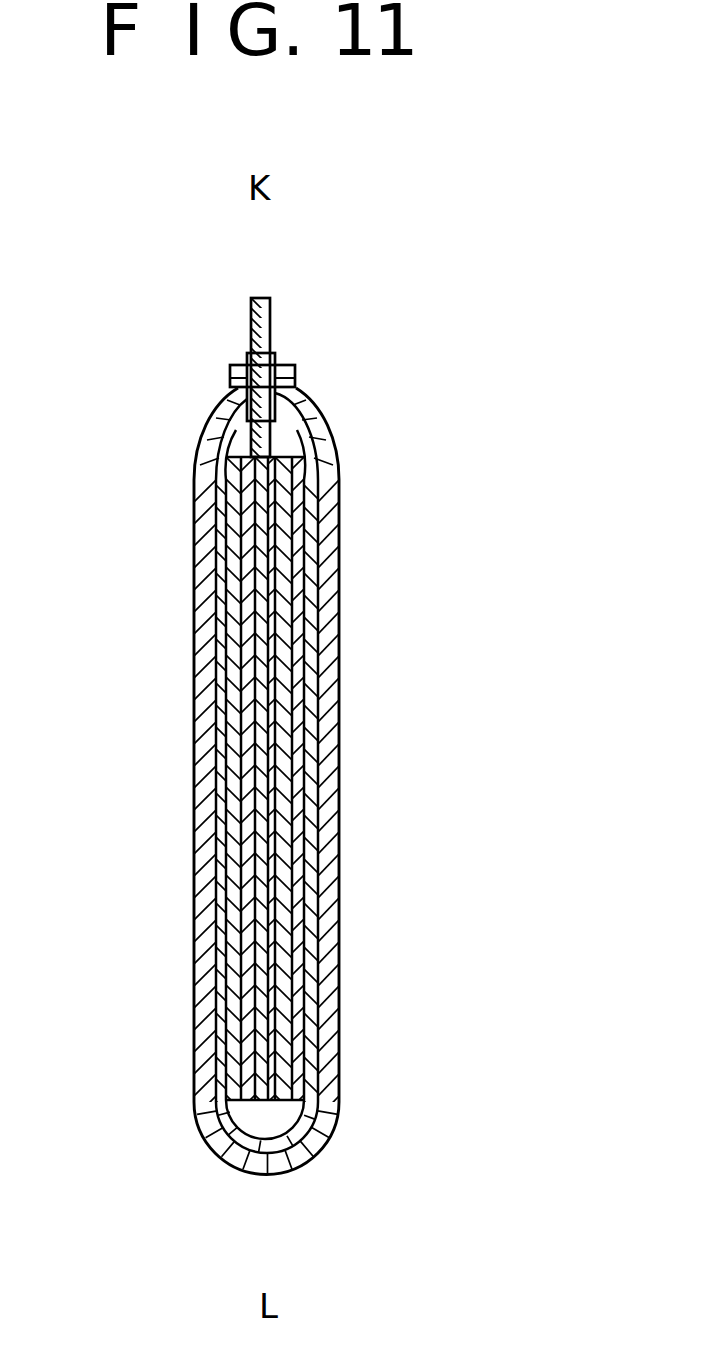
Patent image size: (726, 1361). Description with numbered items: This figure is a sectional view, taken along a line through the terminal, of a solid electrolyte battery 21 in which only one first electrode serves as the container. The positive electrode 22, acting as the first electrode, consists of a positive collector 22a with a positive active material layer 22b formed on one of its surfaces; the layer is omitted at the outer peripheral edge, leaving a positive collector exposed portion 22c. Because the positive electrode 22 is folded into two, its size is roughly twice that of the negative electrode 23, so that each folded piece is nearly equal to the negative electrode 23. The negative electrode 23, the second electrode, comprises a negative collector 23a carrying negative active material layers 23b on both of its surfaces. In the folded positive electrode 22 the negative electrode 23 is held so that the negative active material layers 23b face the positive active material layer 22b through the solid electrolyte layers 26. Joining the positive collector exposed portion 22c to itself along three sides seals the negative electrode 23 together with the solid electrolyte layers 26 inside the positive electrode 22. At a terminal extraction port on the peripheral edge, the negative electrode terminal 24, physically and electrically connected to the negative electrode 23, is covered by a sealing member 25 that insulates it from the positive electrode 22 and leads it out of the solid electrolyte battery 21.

The solid electrolyte battery 21 is at (392, 281).
The positive electrode 22 is at (195, 430).
The positive collector 22a is at (300, 511).
The positive active material layer 22b is at (313, 610).
The positive collector exposed portion 22c is at (293, 389).
The negative electrode 23 is at (247, 797).
The negative collector 23a is at (255, 703).
The negative active material layers 23b is at (283, 885).
The negative electrode terminal 24 is at (268, 312).
The sealing member 25 is at (235, 388).
The solid electrolyte layers 26 is at (243, 993).